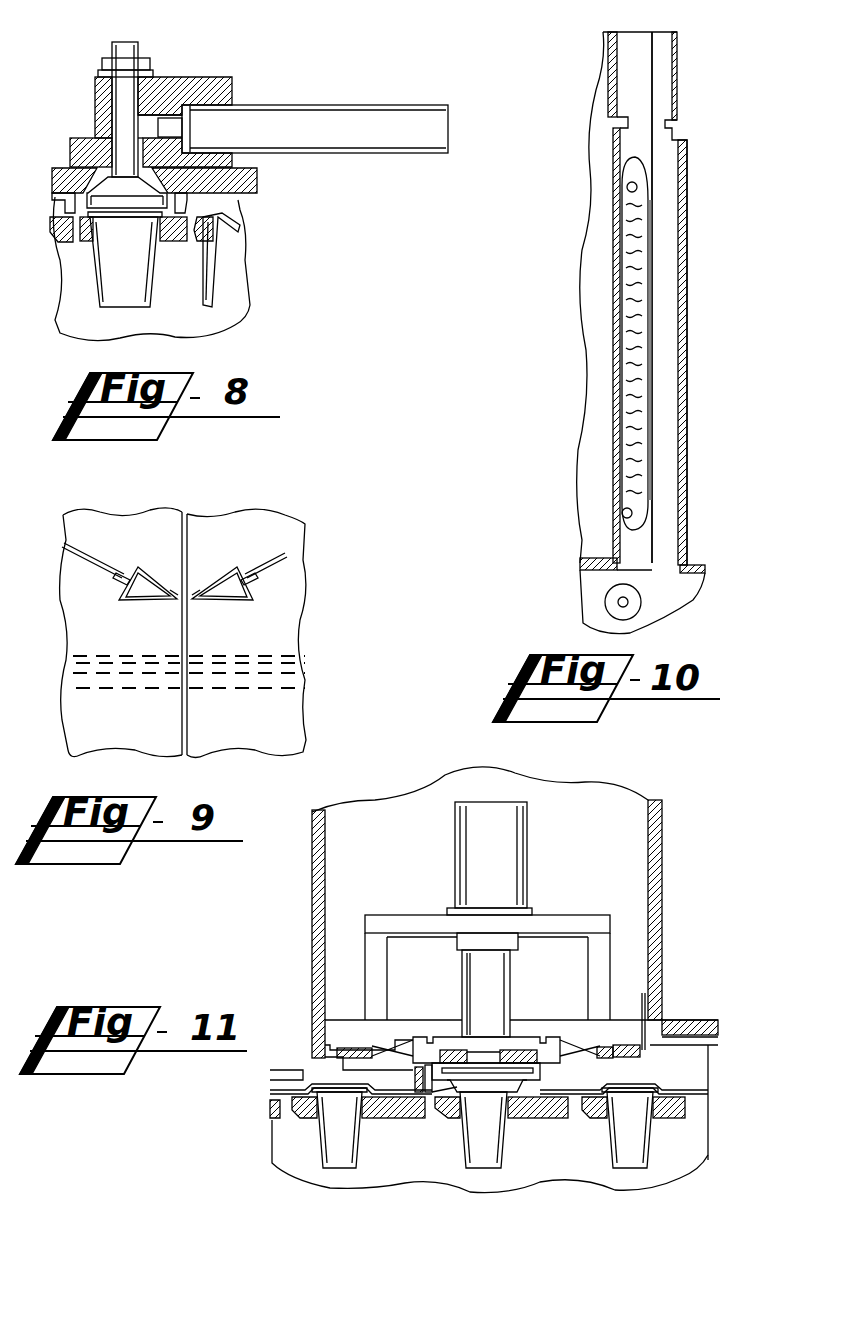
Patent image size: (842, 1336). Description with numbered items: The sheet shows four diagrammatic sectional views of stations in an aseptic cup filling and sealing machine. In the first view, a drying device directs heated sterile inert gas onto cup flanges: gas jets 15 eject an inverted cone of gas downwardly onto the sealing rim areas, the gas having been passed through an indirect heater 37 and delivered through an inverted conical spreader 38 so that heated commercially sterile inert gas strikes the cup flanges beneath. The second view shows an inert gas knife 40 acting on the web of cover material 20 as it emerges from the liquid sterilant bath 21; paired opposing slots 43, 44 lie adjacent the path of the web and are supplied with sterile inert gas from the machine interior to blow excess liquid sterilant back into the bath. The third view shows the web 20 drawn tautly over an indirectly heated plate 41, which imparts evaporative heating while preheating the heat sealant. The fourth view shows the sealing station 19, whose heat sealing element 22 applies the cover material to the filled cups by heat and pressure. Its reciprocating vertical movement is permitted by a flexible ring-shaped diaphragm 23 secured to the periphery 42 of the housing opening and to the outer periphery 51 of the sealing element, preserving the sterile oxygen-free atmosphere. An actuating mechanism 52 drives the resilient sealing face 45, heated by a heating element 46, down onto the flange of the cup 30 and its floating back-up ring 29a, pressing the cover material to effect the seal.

In FIG. 8, the inverted conical spreader 38 is at (140, 47).
In FIG. 8, the indirect heater 37 is at (388, 113).
In FIG. 8, the gas jets 15 is at (165, 168).
In FIG. 9, the web of cover material 20 is at (188, 535).
In FIG. 10, the web of cover material 20 is at (653, 73).
In FIG. 11, the web of cover material 20 is at (397, 1087).
In FIG. 9, the inert gas knife 40 is at (140, 535).
In FIG. 9, the slot 43 is at (175, 603).
In FIG. 9, the slot 44 is at (193, 603).
In FIG. 9, the sterilant bath 21 is at (267, 657).
In FIG. 10, the heated plate 41 is at (624, 166).
In FIG. 11, the sealing station 19 is at (619, 822).
In FIG. 11, the actuating mechanism 52 is at (527, 822).
In FIG. 11, the heat sealing element 22 is at (470, 987).
In FIG. 11, the outer periphery of sealing element 51 is at (550, 1035).
In FIG. 11, the heating element 46 is at (453, 1047).
In FIG. 11, the ring-shaped diaphragm 23 is at (583, 1047).
In FIG. 11, the periphery of the opening in the housing 42 is at (600, 1058).
In FIG. 11, the sealing face 45 is at (523, 1087).
In FIG. 11, the floating back-up ring 29a is at (453, 1118).
In FIG. 11, the cup 30 is at (483, 1168).